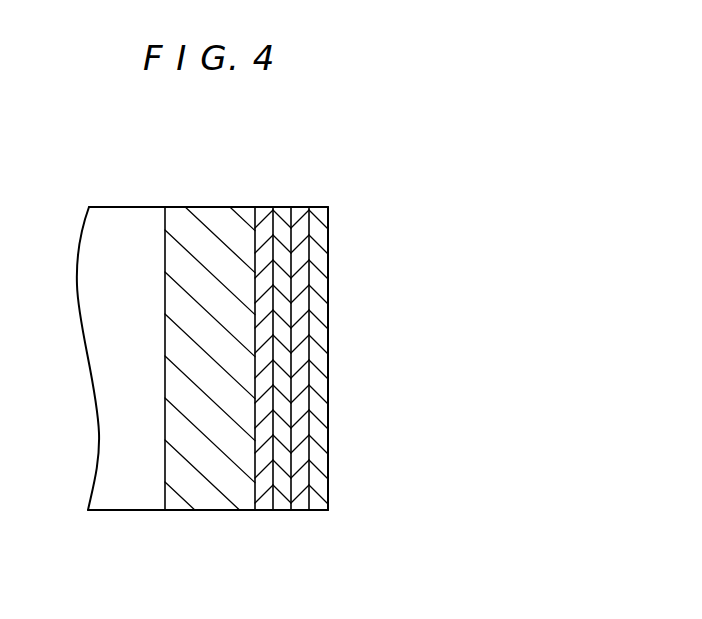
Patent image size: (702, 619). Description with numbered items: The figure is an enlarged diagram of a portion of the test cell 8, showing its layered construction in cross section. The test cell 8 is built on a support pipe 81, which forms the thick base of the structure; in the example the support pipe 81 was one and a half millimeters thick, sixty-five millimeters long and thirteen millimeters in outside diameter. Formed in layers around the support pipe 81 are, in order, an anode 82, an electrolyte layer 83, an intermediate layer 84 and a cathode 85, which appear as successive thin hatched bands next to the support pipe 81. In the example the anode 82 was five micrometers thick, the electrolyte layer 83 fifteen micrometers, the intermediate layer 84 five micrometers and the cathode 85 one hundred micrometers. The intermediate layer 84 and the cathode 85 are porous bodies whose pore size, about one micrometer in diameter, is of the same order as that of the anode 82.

The test cell 8 is at (353, 212).
The support pipe 81 is at (212, 215).
The anode 82 is at (263, 212).
The electrolyte layer 83 is at (283, 212).
The intermediate layer 84 is at (300, 212).
The cathode 85 is at (320, 247).